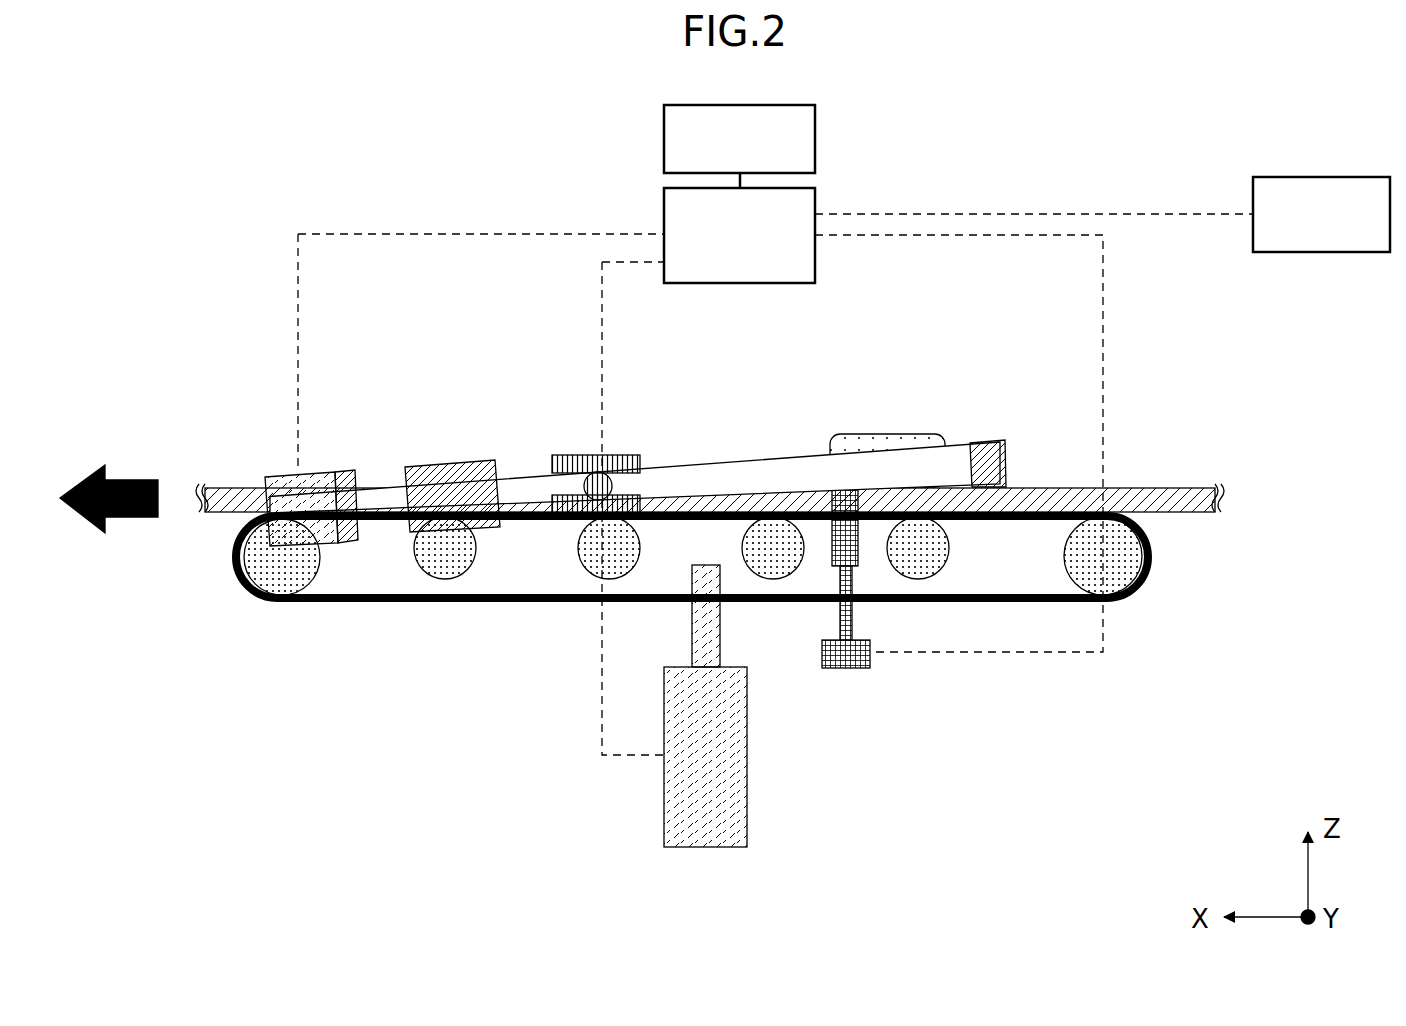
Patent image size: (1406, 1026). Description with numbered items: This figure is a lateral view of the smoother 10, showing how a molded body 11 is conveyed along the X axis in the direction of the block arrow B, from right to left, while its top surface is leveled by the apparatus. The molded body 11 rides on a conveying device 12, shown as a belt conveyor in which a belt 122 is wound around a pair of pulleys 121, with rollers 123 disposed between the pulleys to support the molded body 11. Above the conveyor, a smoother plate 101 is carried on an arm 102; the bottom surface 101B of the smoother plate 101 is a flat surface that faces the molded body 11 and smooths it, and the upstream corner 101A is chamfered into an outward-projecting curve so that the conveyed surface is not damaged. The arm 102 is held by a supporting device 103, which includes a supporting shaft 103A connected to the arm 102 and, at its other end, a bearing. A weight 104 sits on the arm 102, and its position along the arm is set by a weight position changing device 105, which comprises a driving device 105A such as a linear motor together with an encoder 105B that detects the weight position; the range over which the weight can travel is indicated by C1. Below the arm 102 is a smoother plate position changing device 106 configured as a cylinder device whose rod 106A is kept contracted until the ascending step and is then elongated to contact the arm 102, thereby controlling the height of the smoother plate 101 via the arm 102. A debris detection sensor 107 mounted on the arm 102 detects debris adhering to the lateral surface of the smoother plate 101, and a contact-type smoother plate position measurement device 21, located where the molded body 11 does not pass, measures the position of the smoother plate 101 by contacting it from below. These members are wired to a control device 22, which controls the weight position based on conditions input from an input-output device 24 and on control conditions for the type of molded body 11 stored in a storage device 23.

The smoother 10 is at (288, 458).
The molded body 11 is at (1186, 495).
The conveying device 12 is at (762, 642).
The smoother plate position measurement device 21 is at (858, 656).
The control device 22 is at (678, 222).
The storage device 23 is at (678, 137).
The input-output device 24 is at (1320, 256).
The smoother plate 101 is at (893, 447).
The corner 101A is at (953, 486).
The bottom surface 101B is at (873, 500).
The arm 102 is at (722, 470).
The supporting device 103 is at (561, 512).
The supporting shaft 103A is at (588, 490).
The weight 104 is at (500, 530).
The weight position changing device 105 is at (355, 593).
The driving device 105A is at (300, 545).
The encoder 105B is at (352, 540).
The smoother plate position changing device 106 is at (796, 706).
The rod 106A is at (707, 617).
The debris detection sensor 107 is at (990, 465).
The pulley 121 is at (1118, 586).
The belt 122 is at (1150, 574).
The roller 123 is at (450, 570).
The block arrow B is at (131, 495).
The movement range C1 is at (502, 441).